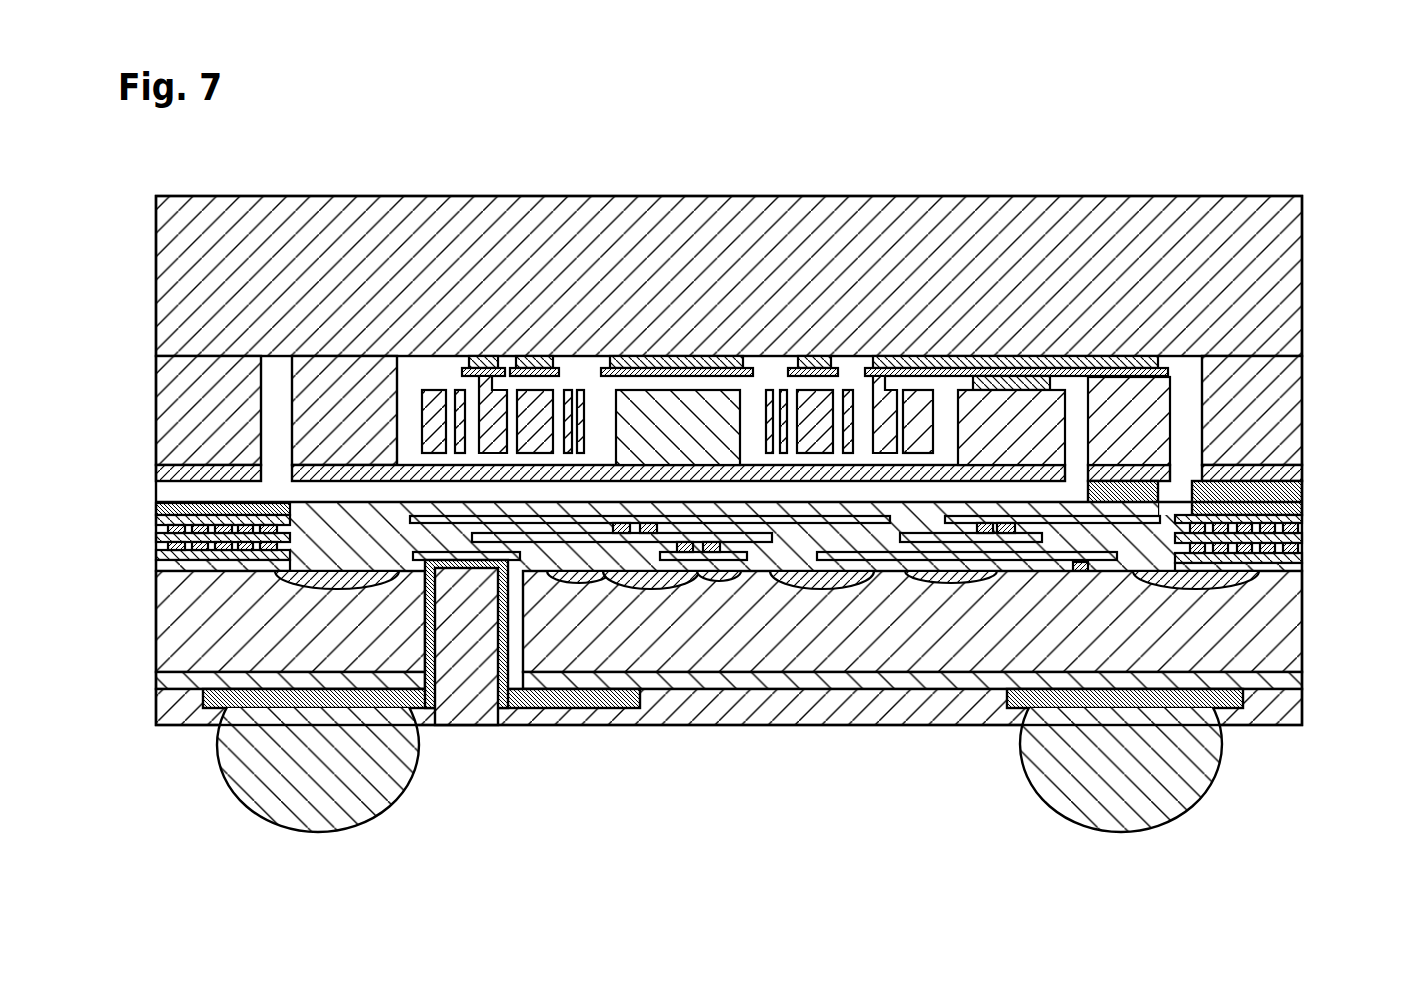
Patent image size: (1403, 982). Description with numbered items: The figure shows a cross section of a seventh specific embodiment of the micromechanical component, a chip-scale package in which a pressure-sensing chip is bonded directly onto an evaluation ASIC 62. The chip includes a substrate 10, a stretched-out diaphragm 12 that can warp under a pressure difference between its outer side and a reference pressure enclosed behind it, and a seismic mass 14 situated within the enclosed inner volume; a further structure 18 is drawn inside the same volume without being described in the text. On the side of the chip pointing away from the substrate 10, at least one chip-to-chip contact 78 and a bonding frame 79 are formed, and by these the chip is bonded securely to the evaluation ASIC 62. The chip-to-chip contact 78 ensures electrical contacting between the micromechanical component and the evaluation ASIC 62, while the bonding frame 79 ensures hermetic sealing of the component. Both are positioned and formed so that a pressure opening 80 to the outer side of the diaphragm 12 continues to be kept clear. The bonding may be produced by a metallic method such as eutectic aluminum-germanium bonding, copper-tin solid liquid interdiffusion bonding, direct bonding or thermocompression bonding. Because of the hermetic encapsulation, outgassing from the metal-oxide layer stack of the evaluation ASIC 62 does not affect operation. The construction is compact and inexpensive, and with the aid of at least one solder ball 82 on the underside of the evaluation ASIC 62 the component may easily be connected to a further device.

The substrate 10 is at (1282, 266).
The diaphragm 12 is at (948, 472).
The seismic mass 14 is at (436, 407).
The micromechanical structure 18 is at (677, 402).
The evaluation ASIC 62 is at (138, 505).
The chip-to-chip contact 78 is at (1147, 493).
The bonding frame 79 is at (1282, 494).
The pressure opening 80 is at (150, 491).
The solder ball 82 is at (395, 777).